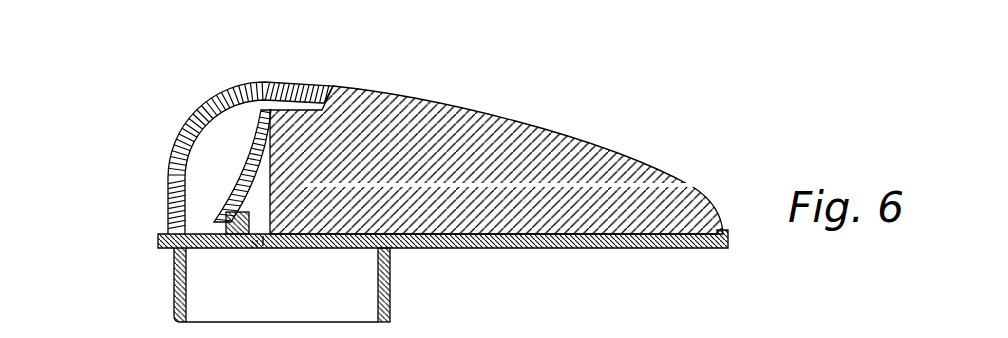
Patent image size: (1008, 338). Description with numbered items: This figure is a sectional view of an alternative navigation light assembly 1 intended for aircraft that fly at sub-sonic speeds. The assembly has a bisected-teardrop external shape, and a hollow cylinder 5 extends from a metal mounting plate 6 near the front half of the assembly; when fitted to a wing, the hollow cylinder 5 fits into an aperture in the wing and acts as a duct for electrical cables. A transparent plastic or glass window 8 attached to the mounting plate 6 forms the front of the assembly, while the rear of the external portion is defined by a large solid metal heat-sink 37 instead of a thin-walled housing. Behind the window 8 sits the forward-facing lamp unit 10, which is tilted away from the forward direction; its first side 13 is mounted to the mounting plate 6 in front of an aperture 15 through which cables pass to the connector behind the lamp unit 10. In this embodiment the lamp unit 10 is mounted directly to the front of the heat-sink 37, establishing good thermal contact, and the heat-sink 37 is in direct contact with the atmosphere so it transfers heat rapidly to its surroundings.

The navigation light assembly 1 is at (206, 76).
The hollow cylinder 5 is at (173, 284).
The metal mounting plate 6 is at (424, 250).
The window 8 is at (170, 153).
The lamp unit 10 is at (254, 147).
The first side of the lamp unit 13 is at (262, 210).
The aperture 15 is at (257, 250).
The heat-sink 37 is at (553, 125).